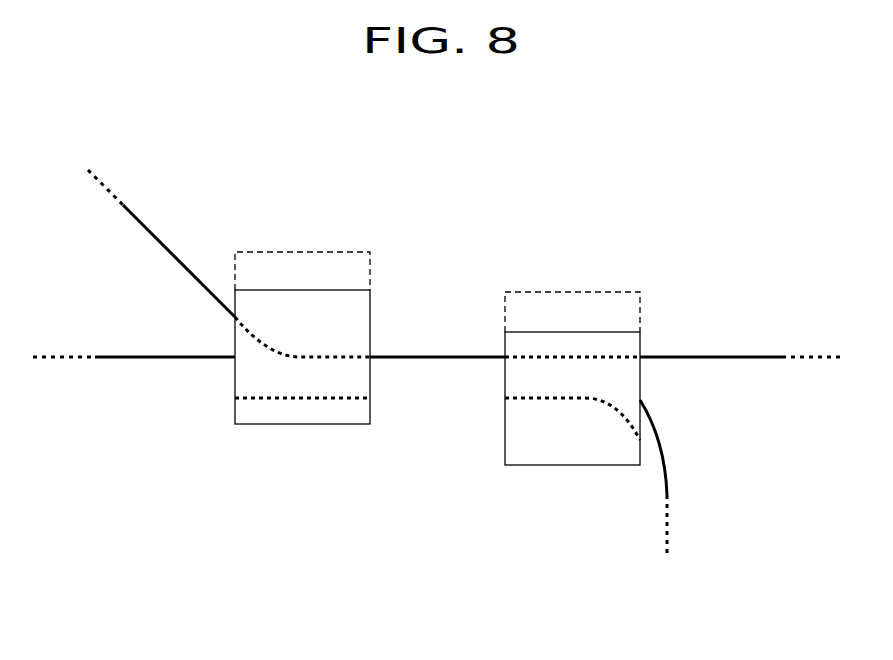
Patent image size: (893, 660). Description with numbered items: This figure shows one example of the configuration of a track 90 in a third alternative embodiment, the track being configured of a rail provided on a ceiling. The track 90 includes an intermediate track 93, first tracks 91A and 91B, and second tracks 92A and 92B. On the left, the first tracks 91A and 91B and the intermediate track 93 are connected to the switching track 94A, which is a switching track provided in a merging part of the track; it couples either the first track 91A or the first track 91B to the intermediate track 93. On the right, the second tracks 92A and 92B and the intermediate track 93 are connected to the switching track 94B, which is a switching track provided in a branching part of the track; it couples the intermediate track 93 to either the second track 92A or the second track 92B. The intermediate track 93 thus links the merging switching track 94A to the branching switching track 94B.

The track 90 is at (439, 345).
The first track 91A is at (153, 233).
The first track 91B is at (157, 360).
The second track 92A is at (722, 352).
The second track 92B is at (664, 445).
The intermediate track 93 is at (422, 360).
The switching track 94A is at (370, 318).
The switching track 94B is at (640, 340).